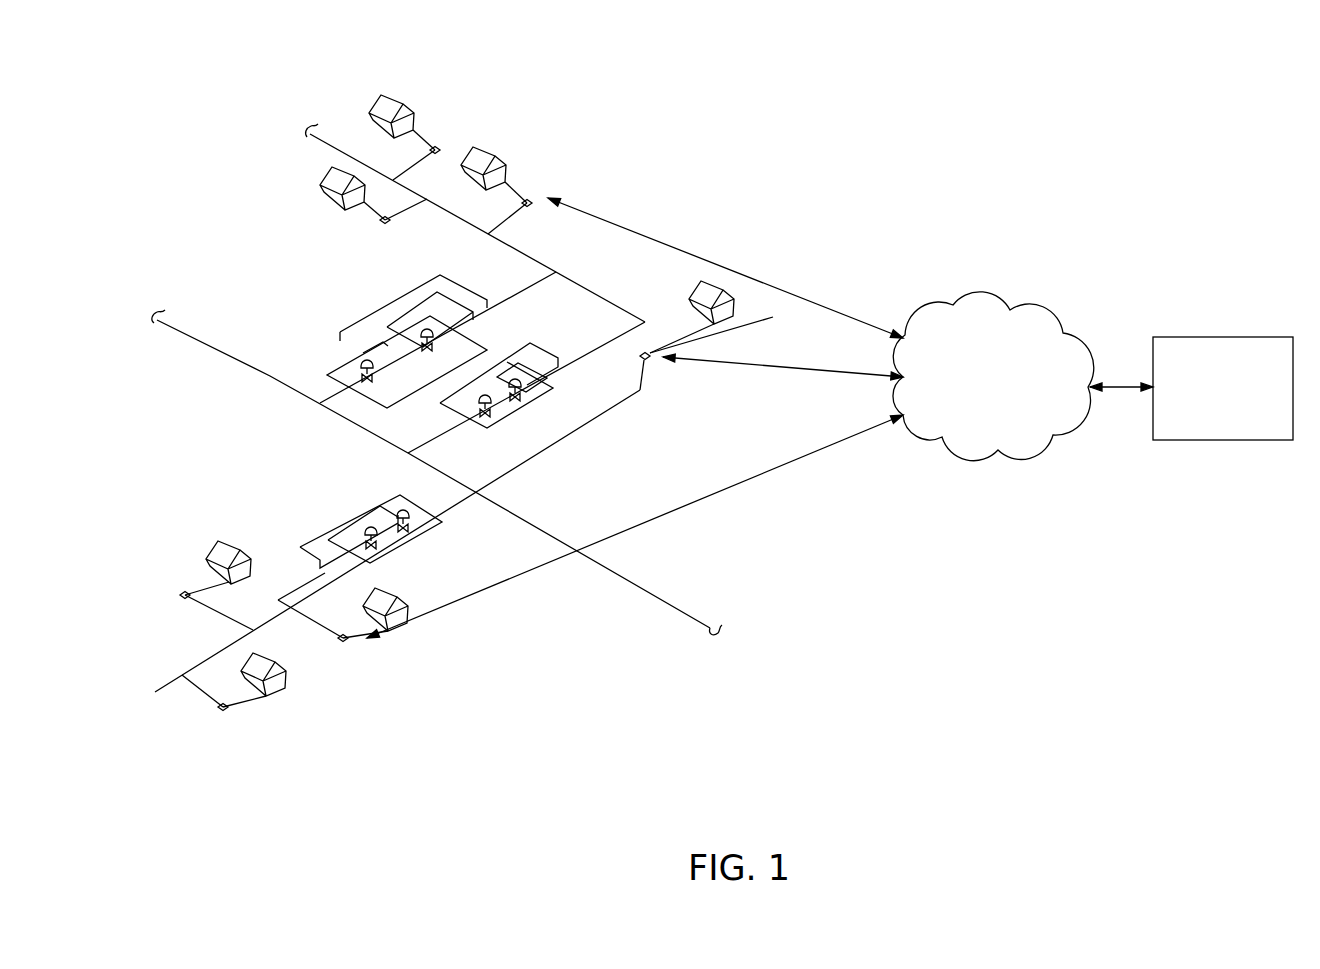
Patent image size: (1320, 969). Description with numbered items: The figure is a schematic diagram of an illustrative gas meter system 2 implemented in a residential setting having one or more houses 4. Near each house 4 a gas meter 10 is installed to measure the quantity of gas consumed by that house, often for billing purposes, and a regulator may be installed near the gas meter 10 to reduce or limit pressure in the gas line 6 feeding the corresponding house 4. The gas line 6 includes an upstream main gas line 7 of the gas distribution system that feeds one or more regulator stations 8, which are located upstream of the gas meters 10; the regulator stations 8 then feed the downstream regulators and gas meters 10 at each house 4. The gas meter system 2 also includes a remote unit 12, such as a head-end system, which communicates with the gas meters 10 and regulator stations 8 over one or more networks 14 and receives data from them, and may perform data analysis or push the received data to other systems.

The gas meter system 2 is at (798, 118).
The house 4 is at (400, 98).
The gas line 6 is at (412, 168).
The upstream main gas line 7 is at (645, 590).
The regulator station 8 is at (425, 330).
The gas meter 10 is at (438, 147).
The remote unit 12 is at (1223, 337).
The network 14 is at (983, 293).